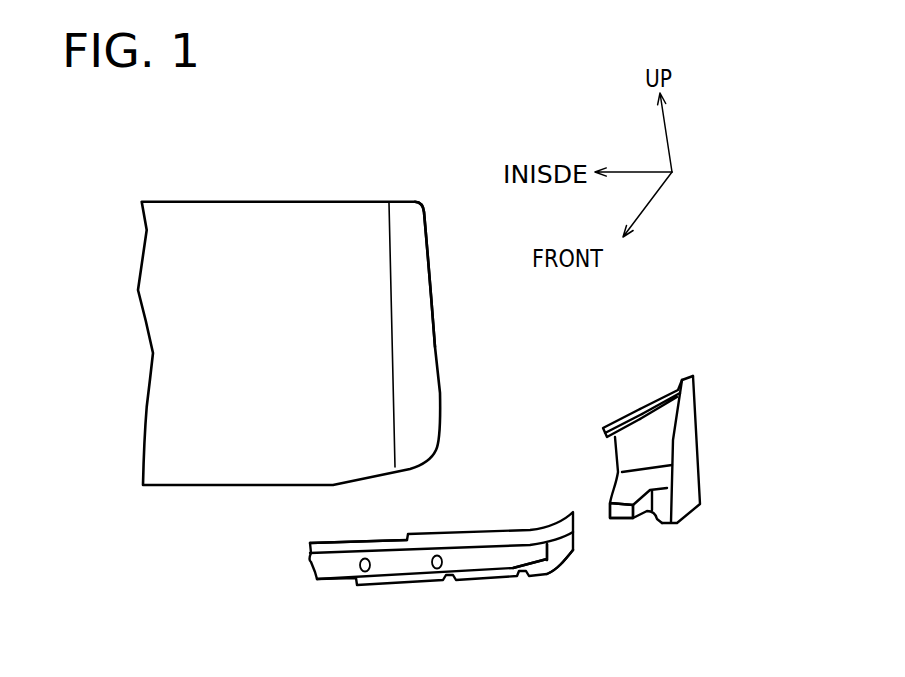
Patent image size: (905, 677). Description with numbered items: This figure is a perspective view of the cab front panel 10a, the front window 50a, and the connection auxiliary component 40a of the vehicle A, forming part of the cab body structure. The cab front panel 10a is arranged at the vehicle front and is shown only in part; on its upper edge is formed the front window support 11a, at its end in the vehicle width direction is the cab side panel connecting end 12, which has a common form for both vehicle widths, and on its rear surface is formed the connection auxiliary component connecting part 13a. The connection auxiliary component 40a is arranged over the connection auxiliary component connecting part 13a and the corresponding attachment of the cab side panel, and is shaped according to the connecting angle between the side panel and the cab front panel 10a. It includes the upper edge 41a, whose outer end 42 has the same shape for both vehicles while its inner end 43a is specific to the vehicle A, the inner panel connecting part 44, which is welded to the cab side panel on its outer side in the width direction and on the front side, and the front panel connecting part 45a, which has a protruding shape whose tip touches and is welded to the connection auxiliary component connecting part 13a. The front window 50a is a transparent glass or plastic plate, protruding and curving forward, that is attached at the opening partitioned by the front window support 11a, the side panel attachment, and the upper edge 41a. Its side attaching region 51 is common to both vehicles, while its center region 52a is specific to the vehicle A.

The front window 50a is at (305, 281).
The center region 52a is at (357, 212).
The side attaching region 51 is at (413, 213).
The cab front panel 10a is at (444, 530).
The front window support 11a is at (368, 540).
The connection auxiliary component connecting part 13a is at (530, 530).
The cab side panel connecting end 12 is at (563, 547).
The connection auxiliary component 40a is at (666, 441).
The inner end 43a is at (620, 420).
The upper edge 41a is at (660, 403).
The outer end 42 is at (683, 378).
The inner panel connecting part 44 is at (700, 503).
The front panel connecting part 45a is at (620, 508).
The vehicle A is at (687, 573).